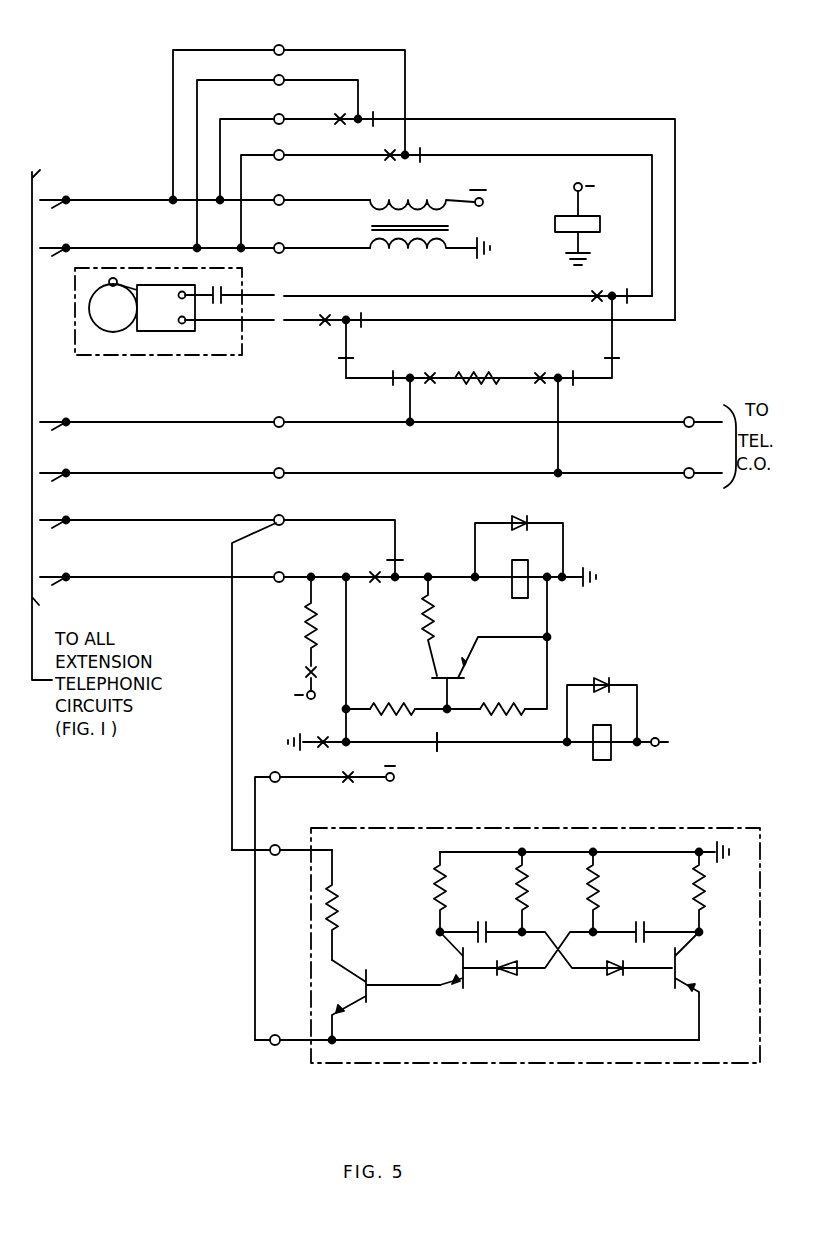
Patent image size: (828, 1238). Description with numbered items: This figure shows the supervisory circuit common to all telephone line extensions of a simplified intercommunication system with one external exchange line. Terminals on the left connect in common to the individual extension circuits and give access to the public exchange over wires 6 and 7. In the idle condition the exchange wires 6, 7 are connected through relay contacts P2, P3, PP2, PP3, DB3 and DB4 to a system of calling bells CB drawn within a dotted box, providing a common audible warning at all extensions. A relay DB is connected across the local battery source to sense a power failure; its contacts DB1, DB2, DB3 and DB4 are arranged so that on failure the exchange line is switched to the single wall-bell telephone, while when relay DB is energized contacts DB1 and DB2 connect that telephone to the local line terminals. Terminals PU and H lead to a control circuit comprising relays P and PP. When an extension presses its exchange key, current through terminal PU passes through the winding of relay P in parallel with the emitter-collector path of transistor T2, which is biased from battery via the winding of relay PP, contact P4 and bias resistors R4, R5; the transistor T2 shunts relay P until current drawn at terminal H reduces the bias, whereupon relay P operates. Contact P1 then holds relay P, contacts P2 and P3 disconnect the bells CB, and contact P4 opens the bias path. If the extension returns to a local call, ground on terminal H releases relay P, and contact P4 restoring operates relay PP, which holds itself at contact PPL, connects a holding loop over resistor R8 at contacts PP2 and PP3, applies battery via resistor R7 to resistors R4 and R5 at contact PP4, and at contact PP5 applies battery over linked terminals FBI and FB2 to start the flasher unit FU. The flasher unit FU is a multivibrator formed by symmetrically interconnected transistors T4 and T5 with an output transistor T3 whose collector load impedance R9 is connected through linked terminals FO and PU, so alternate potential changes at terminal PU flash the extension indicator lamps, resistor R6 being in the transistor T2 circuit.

The relay DB contact DB1 is at (357, 126).
The relay DB contact DB2 is at (414, 148).
The relay DB contact DB3 is at (347, 316).
The relay DB contact DB4 is at (612, 292).
The relay DB is at (600, 224).
The calling bells CB is at (157, 355).
The relay P contact P2 is at (336, 356).
The relay P contact P3 is at (619, 356).
The relay PP contact PP2 is at (424, 360).
The relay PP contact PP3 is at (552, 372).
The resistor R8 is at (489, 360).
The exchange line wire 6 is at (600, 422).
The exchange line wire 7 is at (600, 473).
The pick-up terminal PU is at (273, 505).
The hold terminal H is at (279, 572).
The relay P contact P1 is at (382, 562).
The relay P is at (528, 562).
The resistor R7 is at (304, 626).
The resistor R6 is at (422, 612).
The transistor T2 is at (466, 670).
The relay PP contact PP4 is at (304, 671).
The bias resistor R4 is at (402, 706).
The bias resistor R5 is at (490, 702).
The relay PP holding contact PPL is at (322, 738).
The relay P contact P4 is at (440, 732).
The relay PP is at (600, 760).
The flasher battery terminal FBI is at (277, 772).
The relay PP contact PP5 is at (350, 784).
The flasher output terminal FO is at (277, 845).
The flasher unit FU is at (490, 828).
The collector load impedance R9 is at (340, 893).
The output transistor T3 is at (372, 995).
The multivibrator transistor T4 is at (432, 965).
The multivibrator transistor T5 is at (690, 972).
The flasher battery terminal FB2 is at (277, 1035).